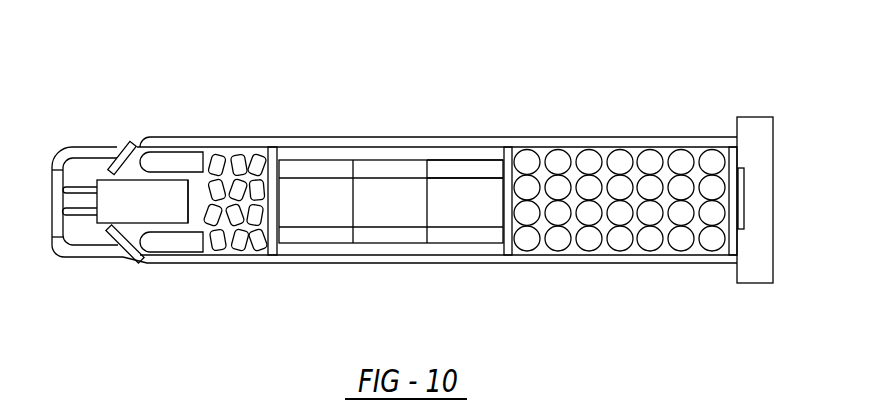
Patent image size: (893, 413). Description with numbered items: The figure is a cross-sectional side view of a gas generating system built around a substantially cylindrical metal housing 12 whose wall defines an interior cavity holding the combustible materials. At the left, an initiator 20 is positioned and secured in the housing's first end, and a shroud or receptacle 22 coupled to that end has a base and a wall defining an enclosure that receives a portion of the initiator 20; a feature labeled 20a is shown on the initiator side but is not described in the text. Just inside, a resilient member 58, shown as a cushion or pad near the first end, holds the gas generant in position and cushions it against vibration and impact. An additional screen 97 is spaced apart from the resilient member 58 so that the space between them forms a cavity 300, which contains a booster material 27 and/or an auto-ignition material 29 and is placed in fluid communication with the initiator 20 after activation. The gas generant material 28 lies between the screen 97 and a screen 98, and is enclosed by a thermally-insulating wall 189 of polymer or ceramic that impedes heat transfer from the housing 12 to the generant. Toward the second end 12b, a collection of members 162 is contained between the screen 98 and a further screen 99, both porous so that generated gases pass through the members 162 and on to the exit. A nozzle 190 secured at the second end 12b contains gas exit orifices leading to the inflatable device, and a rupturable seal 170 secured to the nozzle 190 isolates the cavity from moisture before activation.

The housing 12 is at (190, 136).
The second end 12b is at (573, 137).
The initiator 20 is at (113, 147).
The plug 20a is at (73, 147).
The receptacle 22 is at (52, 257).
The booster material 27 is at (233, 255).
The gas generant material 28 is at (478, 166).
The auto-ignition material 29 is at (237, 150).
The resilient member 58 is at (182, 247).
The additional screen 97 is at (275, 148).
The screen 98 is at (507, 250).
The screen 99 is at (733, 253).
The members 162 is at (583, 243).
The seal 170 is at (745, 197).
The thermally-insulating wall 189 is at (350, 157).
The nozzle 190 is at (748, 125).
The cavity 300 is at (195, 206).